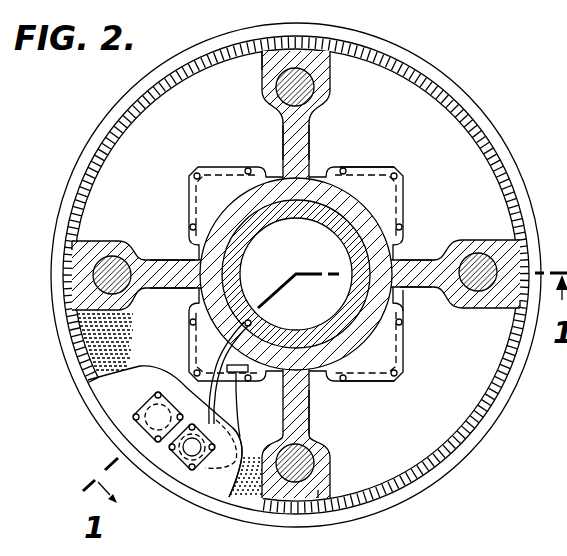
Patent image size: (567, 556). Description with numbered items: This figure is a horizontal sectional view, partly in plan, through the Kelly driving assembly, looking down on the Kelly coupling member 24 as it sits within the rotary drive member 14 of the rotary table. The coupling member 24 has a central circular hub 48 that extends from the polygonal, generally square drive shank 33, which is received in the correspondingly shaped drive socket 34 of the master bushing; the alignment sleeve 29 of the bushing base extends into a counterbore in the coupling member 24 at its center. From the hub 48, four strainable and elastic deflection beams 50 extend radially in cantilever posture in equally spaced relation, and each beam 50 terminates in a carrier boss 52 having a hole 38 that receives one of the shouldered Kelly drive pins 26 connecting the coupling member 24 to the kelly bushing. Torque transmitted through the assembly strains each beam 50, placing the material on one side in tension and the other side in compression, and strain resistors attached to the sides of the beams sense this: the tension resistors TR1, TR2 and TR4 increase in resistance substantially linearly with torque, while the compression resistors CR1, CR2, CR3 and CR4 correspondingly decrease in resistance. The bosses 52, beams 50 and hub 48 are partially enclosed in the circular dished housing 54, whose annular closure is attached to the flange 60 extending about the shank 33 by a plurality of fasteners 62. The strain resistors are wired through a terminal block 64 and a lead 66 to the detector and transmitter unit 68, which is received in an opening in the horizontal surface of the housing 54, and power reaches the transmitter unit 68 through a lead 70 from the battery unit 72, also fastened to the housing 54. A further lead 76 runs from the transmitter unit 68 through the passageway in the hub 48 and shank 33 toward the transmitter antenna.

The rotary drive member 14 is at (476, 115).
The Kelly coupling member 24 is at (380, 201).
The shouldered Kelly drive pins 26 is at (313, 78).
The alignment sleeve 29 is at (242, 248).
The drive shank 33 is at (361, 184).
The drive socket 34 is at (402, 308).
The holes 38 is at (312, 97).
The central circular hub 48 is at (358, 336).
The deflection beams 50 is at (283, 128).
The carrier boss 52 is at (263, 77).
The circular dished housing 54 is at (440, 88).
The flange 60 is at (374, 383).
The fasteners 62 is at (397, 374).
The terminal block 64 is at (241, 393).
The lead 66 is at (241, 420).
The detector and transmitter unit 68 is at (181, 470).
The lead 70 is at (171, 446).
The battery unit 72 is at (136, 425).
The lead 76 is at (207, 366).
The compression strain resistor CR1 is at (283, 143).
The compression strain resistor CR2 is at (421, 259).
The compression strain resistor CR3 is at (309, 403).
The compression strain resistor CR4 is at (163, 289).
The tension strain resistor TR1 is at (309, 138).
The tension strain resistor TR2 is at (425, 288).
The tension strain resistor TR4 is at (167, 261).